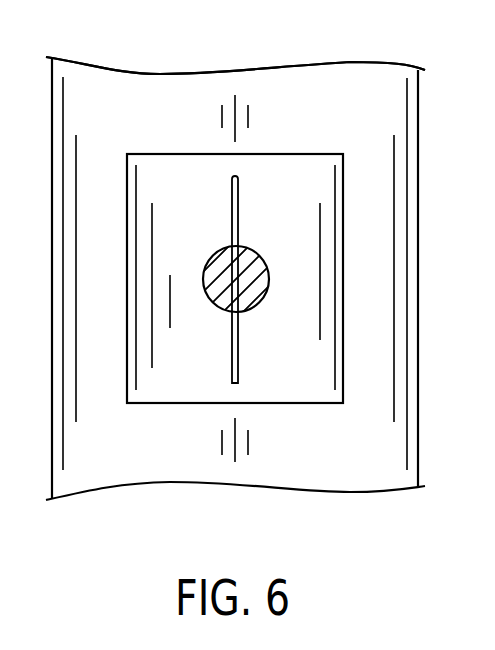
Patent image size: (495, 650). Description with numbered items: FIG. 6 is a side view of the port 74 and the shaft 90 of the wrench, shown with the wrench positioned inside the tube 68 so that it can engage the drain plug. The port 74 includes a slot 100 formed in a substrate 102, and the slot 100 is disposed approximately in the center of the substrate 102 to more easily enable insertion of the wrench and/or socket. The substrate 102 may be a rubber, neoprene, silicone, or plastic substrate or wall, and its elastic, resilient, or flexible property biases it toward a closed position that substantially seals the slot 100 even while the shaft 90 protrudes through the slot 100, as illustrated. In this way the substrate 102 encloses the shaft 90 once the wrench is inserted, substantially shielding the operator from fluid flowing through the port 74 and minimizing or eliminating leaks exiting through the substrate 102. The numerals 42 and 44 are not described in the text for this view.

The panel assembly 42 is at (393, 514).
The panel 44 is at (434, 236).
The tube 68 is at (345, 77).
The port 74 is at (300, 155).
The shaft 90 is at (250, 285).
The slot 100 is at (238, 208).
The substrate 102 is at (203, 224).